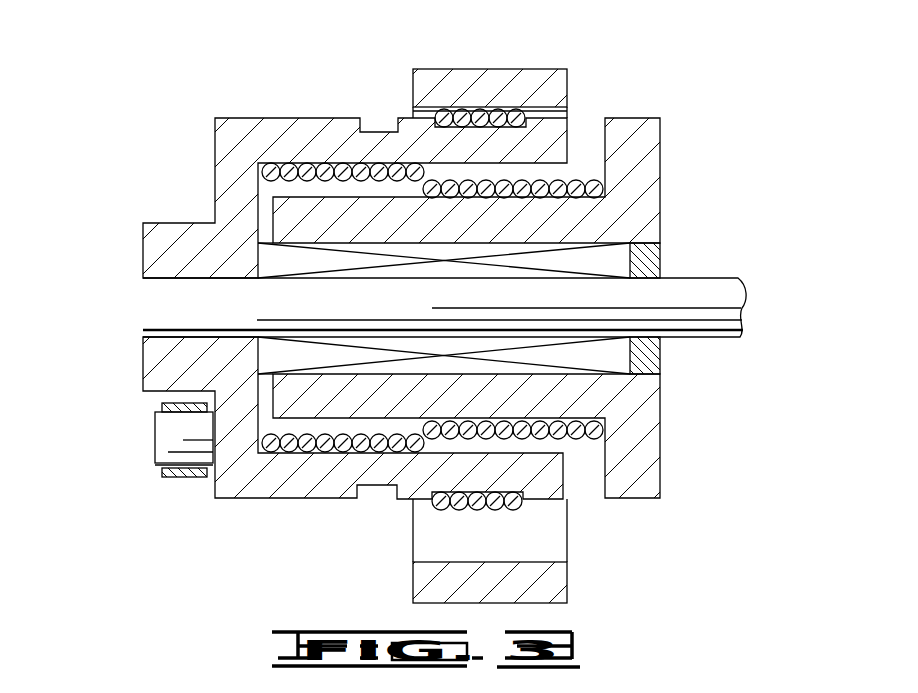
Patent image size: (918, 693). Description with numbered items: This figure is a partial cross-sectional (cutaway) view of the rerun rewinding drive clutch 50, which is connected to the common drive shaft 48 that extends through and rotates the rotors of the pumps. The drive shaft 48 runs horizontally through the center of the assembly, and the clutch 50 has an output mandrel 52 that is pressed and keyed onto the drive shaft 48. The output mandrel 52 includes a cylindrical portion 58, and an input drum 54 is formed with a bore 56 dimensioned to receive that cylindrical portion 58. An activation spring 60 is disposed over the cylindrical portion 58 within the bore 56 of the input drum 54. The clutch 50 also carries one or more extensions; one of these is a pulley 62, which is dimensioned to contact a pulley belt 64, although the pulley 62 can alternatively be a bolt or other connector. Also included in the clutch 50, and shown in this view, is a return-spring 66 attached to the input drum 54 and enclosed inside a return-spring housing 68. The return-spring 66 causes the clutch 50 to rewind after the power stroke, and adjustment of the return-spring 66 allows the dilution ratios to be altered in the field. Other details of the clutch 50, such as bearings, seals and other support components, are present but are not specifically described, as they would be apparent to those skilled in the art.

The drive shaft 48 is at (686, 278).
The rerun rewinding drive clutch 50 is at (240, 95).
The output mandrel 52 is at (662, 186).
The input drum 54 is at (248, 499).
The bore 56 is at (328, 430).
The cylindrical portion 58 is at (392, 400).
The activation spring 60 is at (592, 438).
The pulley 62 is at (162, 410).
The pulley belt 64 is at (178, 477).
The return-spring 66 is at (443, 120).
The return-spring housing 68 is at (518, 86).